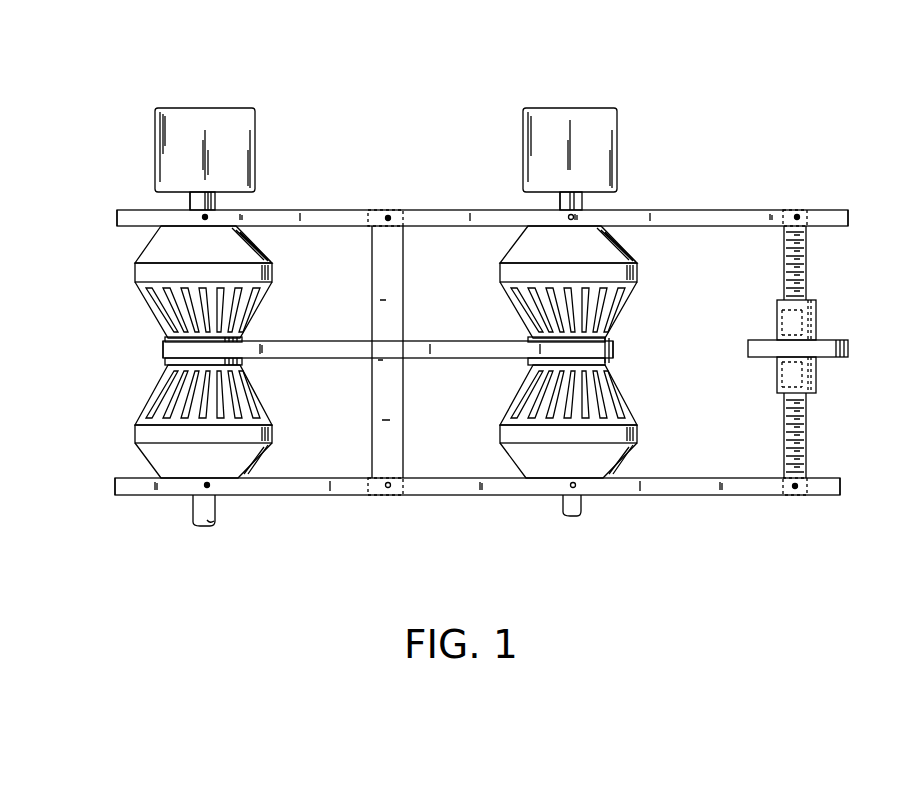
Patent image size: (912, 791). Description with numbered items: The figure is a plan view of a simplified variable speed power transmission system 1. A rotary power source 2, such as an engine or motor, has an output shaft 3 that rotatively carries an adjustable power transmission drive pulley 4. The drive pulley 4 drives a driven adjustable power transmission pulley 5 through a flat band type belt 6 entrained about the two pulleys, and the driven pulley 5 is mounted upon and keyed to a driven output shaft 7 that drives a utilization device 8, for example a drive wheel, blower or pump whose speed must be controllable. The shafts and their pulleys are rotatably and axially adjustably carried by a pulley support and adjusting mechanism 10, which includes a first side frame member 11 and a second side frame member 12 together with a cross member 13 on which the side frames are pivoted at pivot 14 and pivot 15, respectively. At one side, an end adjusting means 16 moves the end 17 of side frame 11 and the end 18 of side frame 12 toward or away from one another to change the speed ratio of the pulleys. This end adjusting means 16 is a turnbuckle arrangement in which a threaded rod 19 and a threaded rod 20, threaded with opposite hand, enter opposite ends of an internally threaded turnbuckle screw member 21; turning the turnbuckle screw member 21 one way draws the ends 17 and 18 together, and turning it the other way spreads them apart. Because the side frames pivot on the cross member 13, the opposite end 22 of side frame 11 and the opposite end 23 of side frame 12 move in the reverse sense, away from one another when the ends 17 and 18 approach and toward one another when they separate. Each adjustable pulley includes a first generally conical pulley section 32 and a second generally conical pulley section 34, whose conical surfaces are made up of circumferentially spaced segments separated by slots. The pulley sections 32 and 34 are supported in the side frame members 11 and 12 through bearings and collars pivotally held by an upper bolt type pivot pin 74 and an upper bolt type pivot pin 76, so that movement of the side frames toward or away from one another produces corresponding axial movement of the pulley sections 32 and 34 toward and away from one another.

The variable speed power transmission system 1 is at (388, 62).
The rotary power source 2 is at (225, 128).
The output shaft 3 is at (196, 203).
The adjustable power transmission drive pulley 4 is at (162, 349).
The driven adjustable power transmission pulley 5 is at (620, 347).
The flat band type belt 6 is at (284, 350).
The driven output shaft 7 is at (562, 202).
The utilization device 8 is at (588, 128).
The pulley support and adjusting mechanism 10 is at (786, 158).
The first side frame member 11 is at (690, 492).
The second side frame member 12 is at (704, 222).
The cross member 13 is at (384, 282).
The pivot 14 is at (388, 486).
The pivot 15 is at (388, 216).
The end adjusting means 16 is at (846, 367).
The end of side frame member 17 is at (834, 492).
The end of side frame member 18 is at (848, 213).
The threaded rod 19 is at (798, 446).
The threaded rod 20 is at (804, 266).
The turnbuckle screw member 21 is at (836, 340).
The opposite end of side frame member 22 is at (118, 486).
The opposite end of side frame member 23 is at (120, 213).
The first conical pulley section 32 is at (135, 409).
The second conical pulley section 34 is at (132, 283).
The upper bolt type pivot pin 74 is at (205, 486).
The upper bolt type pivot pin 76 is at (208, 217).